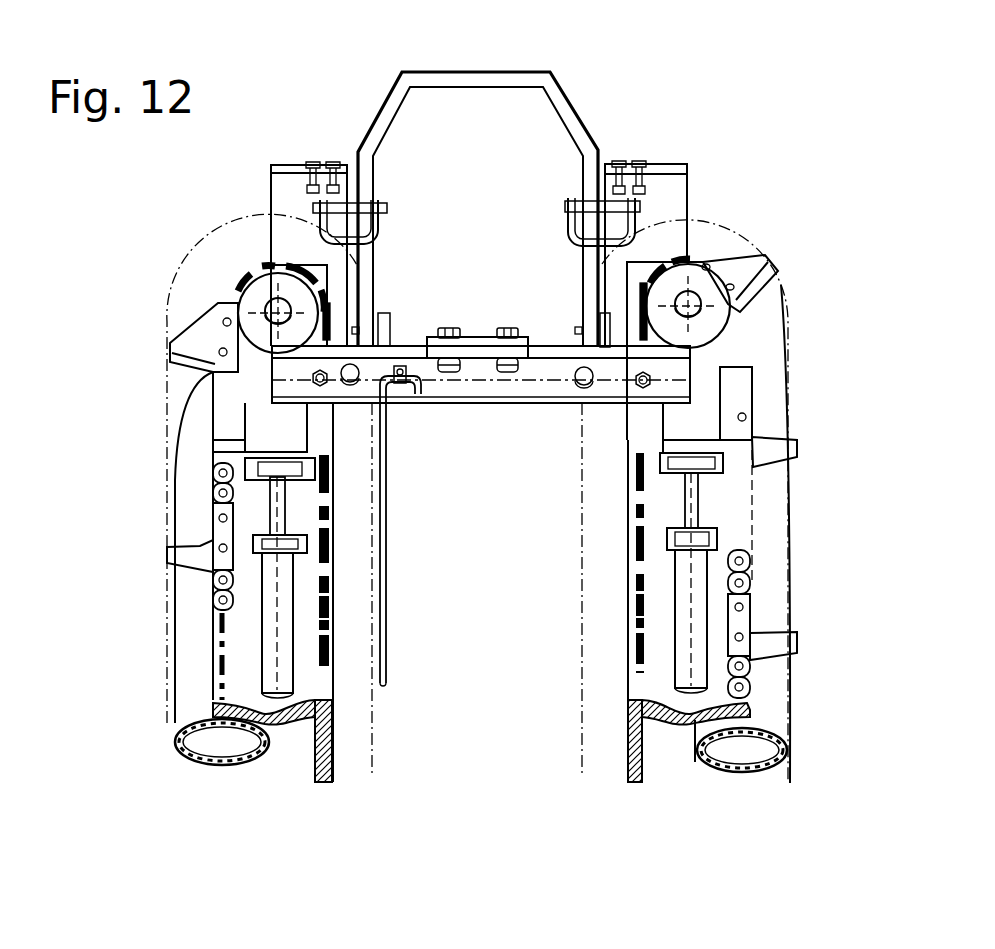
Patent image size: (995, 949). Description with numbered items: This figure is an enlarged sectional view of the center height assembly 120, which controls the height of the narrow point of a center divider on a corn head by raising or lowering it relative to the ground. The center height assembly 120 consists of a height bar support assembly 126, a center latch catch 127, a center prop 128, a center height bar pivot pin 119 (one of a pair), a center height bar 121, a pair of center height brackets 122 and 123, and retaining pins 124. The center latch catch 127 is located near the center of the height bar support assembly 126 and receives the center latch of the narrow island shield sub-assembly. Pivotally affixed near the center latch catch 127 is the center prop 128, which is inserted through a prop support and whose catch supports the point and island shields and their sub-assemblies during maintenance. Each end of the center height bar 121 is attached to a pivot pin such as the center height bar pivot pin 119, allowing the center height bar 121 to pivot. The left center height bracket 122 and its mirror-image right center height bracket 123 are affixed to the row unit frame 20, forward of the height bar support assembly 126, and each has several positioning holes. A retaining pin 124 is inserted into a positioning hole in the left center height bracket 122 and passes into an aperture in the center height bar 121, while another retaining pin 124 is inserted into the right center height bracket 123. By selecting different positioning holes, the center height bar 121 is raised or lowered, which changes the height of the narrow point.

The row unit frame 20 is at (752, 528).
The center height bar pivot pin 119 is at (578, 327).
The center height assembly 120 is at (410, 346).
The center height bar 121 is at (512, 72).
The left center height bracket 122 is at (352, 173).
The right center height bracket 123 is at (605, 180).
The retaining pin 124 is at (387, 208).
The height bar support assembly 126 is at (427, 346).
The center latch catch 127 is at (480, 337).
The center prop 128 is at (386, 545).